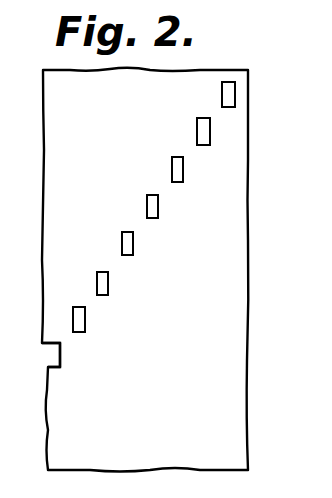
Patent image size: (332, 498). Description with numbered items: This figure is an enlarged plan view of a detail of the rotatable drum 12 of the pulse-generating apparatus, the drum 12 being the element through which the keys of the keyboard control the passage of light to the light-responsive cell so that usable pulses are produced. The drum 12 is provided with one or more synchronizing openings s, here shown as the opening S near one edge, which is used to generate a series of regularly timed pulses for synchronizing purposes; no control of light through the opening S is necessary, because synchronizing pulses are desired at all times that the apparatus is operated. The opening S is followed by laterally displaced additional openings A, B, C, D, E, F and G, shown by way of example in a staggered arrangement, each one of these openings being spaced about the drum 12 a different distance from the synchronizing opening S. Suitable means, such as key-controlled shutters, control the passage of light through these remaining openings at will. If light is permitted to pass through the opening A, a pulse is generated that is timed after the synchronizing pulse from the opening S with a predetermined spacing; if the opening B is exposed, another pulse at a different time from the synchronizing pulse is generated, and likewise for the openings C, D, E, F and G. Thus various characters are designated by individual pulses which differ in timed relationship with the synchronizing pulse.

The rotatable drum 12 is at (242, 128).
The synchronizing opening S is at (235, 95).
The opening A is at (197, 128).
The opening B is at (172, 170).
The opening C is at (147, 205).
The opening D is at (122, 243).
The opening E is at (97, 280).
The opening F is at (73, 316).
The opening G is at (53, 355).